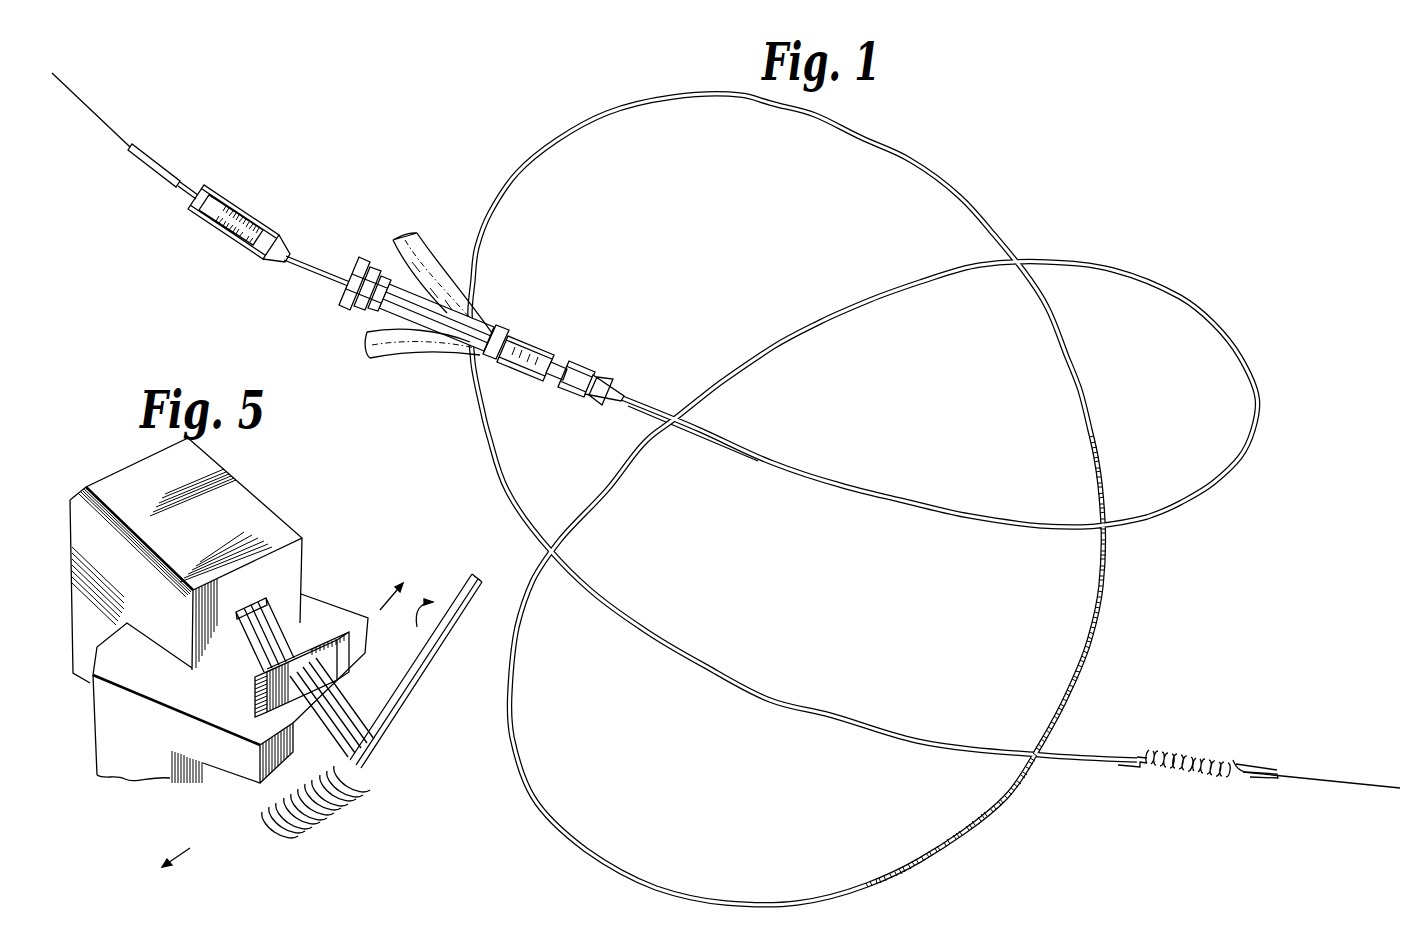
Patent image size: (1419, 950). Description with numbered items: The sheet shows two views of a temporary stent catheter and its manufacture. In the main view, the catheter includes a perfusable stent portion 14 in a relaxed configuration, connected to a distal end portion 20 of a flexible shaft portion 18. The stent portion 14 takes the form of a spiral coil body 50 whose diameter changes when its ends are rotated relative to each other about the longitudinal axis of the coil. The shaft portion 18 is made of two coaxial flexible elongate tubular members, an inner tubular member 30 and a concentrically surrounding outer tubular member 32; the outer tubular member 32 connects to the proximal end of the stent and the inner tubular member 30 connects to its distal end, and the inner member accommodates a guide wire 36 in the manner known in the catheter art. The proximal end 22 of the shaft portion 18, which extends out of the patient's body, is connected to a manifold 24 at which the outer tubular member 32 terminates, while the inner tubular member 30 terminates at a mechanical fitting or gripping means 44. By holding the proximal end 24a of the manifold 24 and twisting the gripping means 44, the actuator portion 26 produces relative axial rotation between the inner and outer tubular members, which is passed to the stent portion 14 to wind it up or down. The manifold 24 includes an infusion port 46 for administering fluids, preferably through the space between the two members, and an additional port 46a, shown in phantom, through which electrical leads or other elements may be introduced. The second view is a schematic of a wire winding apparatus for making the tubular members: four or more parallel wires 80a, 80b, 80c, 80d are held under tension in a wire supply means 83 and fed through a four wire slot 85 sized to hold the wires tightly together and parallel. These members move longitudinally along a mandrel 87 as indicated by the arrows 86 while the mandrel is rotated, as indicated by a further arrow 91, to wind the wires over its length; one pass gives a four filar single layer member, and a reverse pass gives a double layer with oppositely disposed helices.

In FIG. 1, the perfusable stent portion 14 is at (1222, 742).
In FIG. 1, the flexible shaft portion 18 is at (978, 200).
In FIG. 1, the distal end portion 20 is at (1142, 746).
In FIG. 1, the proximal end 22 is at (762, 423).
In FIG. 1, the manifold 24 is at (594, 360).
In FIG. 1, the proximal end of manifold 24a is at (378, 260).
In FIG. 1, the actuator portion 26 is at (352, 180).
In FIG. 1, the inner tubular member 30 is at (312, 258).
In FIG. 1, the outer tubular member 32 is at (624, 392).
In FIG. 1, the guide wire 36 is at (80, 97).
In FIG. 1, the gripping means 44 is at (263, 213).
In FIG. 1, the infusion port 46 is at (428, 258).
In FIG. 1, the additional port 46a is at (433, 345).
In FIG. 1, the spiral coil body 50 is at (1233, 772).
In FIG. 5, the wire supply means 83 is at (279, 518).
In FIG. 5, the parallel wire 80a is at (302, 592).
In FIG. 5, the parallel wire 80b is at (302, 592).
In FIG. 5, the parallel wire 80c is at (280, 618).
In FIG. 5, the parallel wire 80d is at (323, 697).
In FIG. 5, the four wire slot 85 is at (338, 640).
In FIG. 5, the arrows 86 is at (405, 580).
In FIG. 5, the mandrel 87 is at (393, 710).
In FIG. 5, the mandrel rod 91 is at (467, 632).